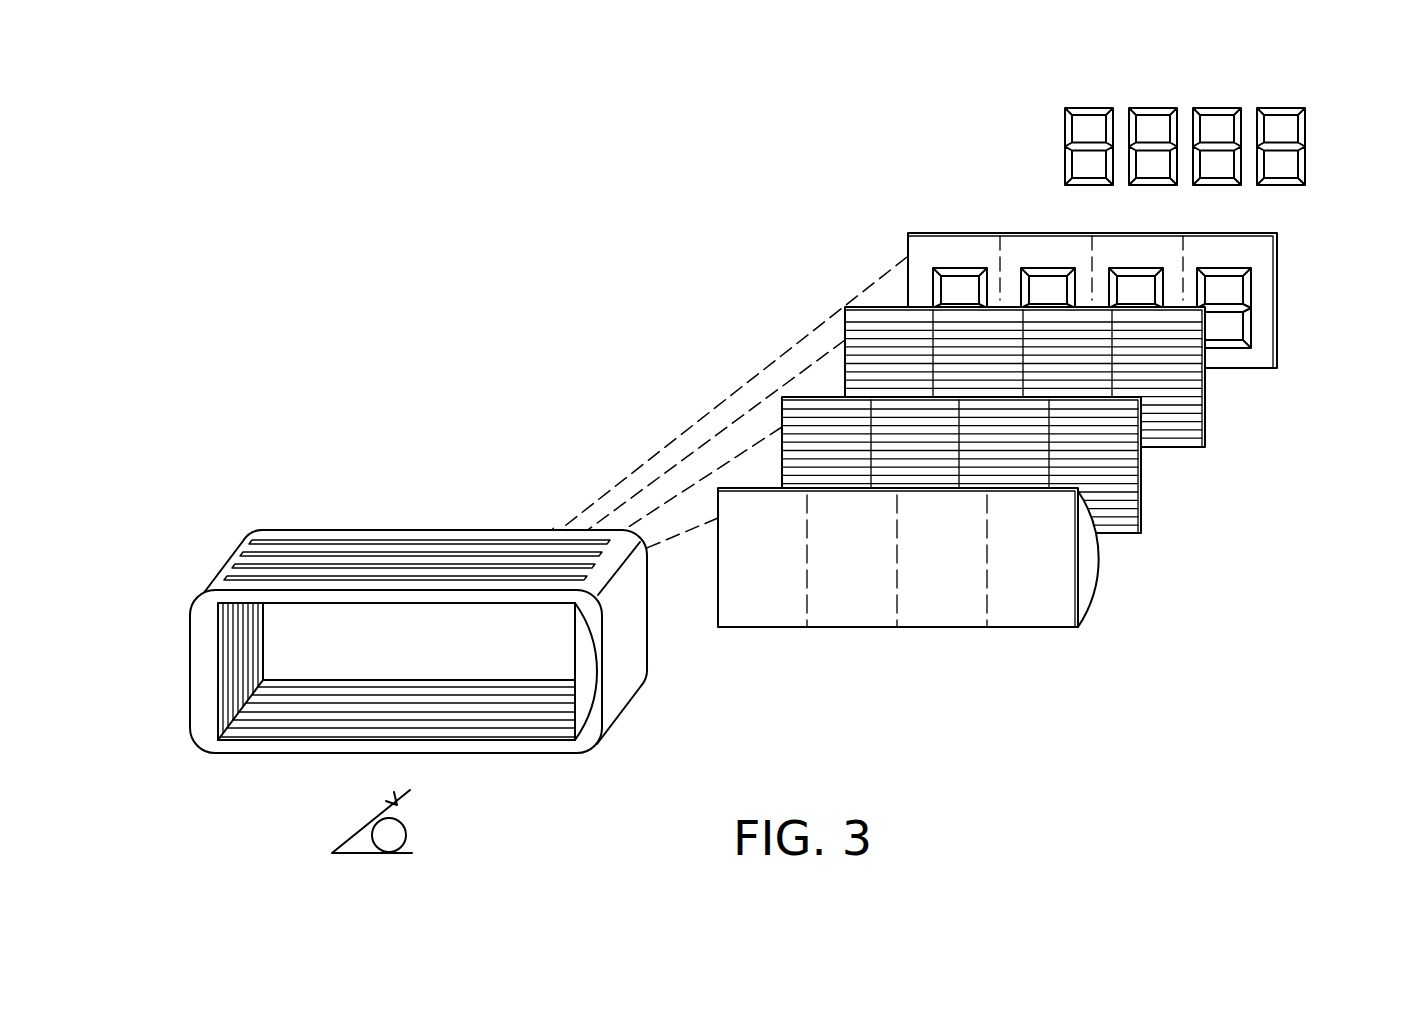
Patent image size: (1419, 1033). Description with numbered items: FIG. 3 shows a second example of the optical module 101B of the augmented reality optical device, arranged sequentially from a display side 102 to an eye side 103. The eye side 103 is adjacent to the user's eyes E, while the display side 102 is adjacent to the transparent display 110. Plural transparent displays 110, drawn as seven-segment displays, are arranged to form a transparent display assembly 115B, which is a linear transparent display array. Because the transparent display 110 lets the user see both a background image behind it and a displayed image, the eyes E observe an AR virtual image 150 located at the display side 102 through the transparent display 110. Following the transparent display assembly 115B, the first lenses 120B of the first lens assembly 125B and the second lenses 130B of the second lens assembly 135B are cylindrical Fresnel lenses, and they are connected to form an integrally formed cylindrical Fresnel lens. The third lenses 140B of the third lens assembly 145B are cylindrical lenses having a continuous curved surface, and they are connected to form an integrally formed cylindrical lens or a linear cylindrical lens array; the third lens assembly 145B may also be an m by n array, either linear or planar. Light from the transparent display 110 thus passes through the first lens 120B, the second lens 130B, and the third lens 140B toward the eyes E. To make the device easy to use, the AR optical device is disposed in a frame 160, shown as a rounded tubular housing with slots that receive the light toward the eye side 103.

The display side 102 is at (1178, 107).
The AR virtual image 150 is at (1082, 112).
The optical module 101B is at (1029, 438).
The transparent display 110 is at (923, 246).
The transparent display assembly 115B is at (1253, 256).
The first lens 120B is at (857, 325).
The first lens assembly 125B is at (1182, 392).
The second lens 130B is at (795, 412).
The second lens assembly 135B is at (1117, 480).
The third lens 140B is at (732, 503).
The third lens assembly 145B is at (1053, 572).
The frame 160 is at (623, 682).
The eye side 103 is at (202, 863).
The eyes E is at (362, 833).